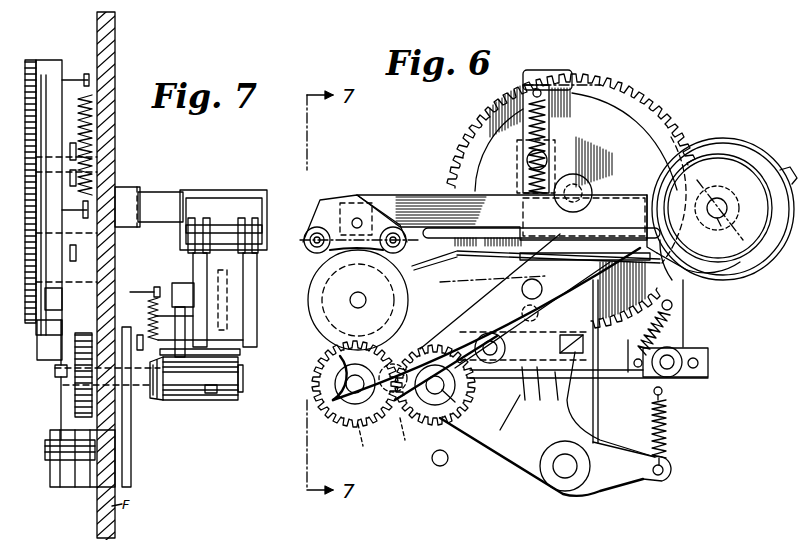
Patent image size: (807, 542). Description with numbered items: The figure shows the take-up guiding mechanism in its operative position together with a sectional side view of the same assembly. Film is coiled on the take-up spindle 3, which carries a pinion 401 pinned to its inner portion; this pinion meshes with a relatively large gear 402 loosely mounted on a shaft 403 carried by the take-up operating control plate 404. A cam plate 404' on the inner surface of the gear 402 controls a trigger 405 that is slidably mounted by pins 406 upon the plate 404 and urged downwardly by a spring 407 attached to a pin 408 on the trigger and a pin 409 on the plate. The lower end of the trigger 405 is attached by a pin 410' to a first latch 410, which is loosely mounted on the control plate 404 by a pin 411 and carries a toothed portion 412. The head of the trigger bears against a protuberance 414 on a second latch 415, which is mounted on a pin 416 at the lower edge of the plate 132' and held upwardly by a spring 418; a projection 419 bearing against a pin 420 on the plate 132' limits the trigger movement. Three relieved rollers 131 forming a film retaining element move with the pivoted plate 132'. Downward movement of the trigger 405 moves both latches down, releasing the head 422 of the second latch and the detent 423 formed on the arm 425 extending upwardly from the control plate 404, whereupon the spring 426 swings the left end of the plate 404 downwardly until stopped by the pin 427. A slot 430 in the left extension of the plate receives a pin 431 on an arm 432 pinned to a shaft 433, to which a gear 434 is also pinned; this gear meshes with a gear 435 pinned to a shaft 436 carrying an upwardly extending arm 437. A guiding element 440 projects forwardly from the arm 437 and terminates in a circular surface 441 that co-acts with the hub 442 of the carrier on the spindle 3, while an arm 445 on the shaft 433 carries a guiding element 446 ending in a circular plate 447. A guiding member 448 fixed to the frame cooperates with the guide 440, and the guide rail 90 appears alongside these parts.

In FIG. 6, the take-up spindle 3 is at (721, 226).
In FIG. 7, the guide rail / roller 90 is at (257, 347).
In FIG. 6, the guide rail / roller 90 is at (308, 255).
In FIG. 7, the rollers 131 is at (206, 222).
In FIG. 6, the rollers 131 is at (305, 230).
In FIG. 7, the plate 132' is at (163, 186).
In FIG. 6, the plate 132' is at (556, 255).
In FIG. 6, the pinion 401 is at (735, 195).
In FIG. 7, the gear 402 is at (30, 60).
In FIG. 6, the gear 402 is at (625, 96).
In FIG. 7, the shaft 403 is at (100, 234).
In FIG. 6, the shaft 403 is at (577, 187).
In FIG. 6, the take-up operating control plate 404 is at (555, 461).
In FIG. 7, the cam plate 404' is at (65, 187).
In FIG. 6, the cam plate 404' is at (548, 142).
In FIG. 7, the trigger 405 is at (48, 60).
In FIG. 6, the trigger 405 is at (560, 72).
In FIG. 7, the pins 406 is at (77, 152).
In FIG. 6, the pins 406 is at (541, 160).
In FIG. 7, the spring 407 is at (92, 125).
In FIG. 6, the spring 407 is at (546, 128).
In FIG. 7, the pin 408 is at (89, 80).
In FIG. 6, the pin 408 is at (533, 93).
In FIG. 7, the pin 409 is at (90, 210).
In FIG. 6, the pin 409 is at (584, 205).
In FIG. 7, the first latch 410 is at (66, 334).
In FIG. 6, the first latch 410 is at (559, 419).
In FIG. 7, the pin 410' is at (70, 292).
In FIG. 6, the pin 410' is at (525, 346).
In FIG. 6, the pin 411 is at (445, 333).
In FIG. 6, the toothed portion 412 is at (637, 359).
In FIG. 6, the protuberance 414 is at (628, 378).
In FIG. 6, the second latch 415 is at (682, 383).
In FIG. 6, the pin 416 is at (709, 378).
In FIG. 7, the spring 418 is at (159, 292).
In FIG. 6, the spring 418 is at (675, 313).
In FIG. 6, the projection 419 is at (709, 352).
In FIG. 6, the pin 420 is at (699, 363).
In FIG. 7, the head 422 is at (160, 342).
In FIG. 6, the head 422 is at (525, 400).
In FIG. 7, the detent 423 is at (157, 315).
In FIG. 6, the detent 423 is at (594, 433).
In FIG. 7, the arm 425 is at (128, 425).
In FIG. 6, the arm 425 is at (589, 406).
In FIG. 6, the spring 426 is at (668, 436).
In FIG. 7, the pin 427 is at (48, 462).
In FIG. 6, the pin 427 is at (449, 458).
In FIG. 6, the slot 430 is at (405, 418).
In FIG. 7, the pin 431 is at (56, 372).
In FIG. 6, the pin 431 is at (400, 412).
In FIG. 6, the arm 432 is at (375, 441).
In FIG. 7, the shaft 433 is at (243, 390).
In FIG. 7, the gear 434 is at (75, 412).
In FIG. 6, the gear 434 is at (352, 418).
In FIG. 6, the gear 435 is at (472, 364).
In FIG. 7, the shaft 436 is at (215, 395).
In FIG. 6, the shaft 436 is at (455, 402).
In FIG. 7, the arm 437 is at (195, 352).
In FIG. 6, the arm 437 is at (478, 262).
In FIG. 6, the guiding element 440 is at (643, 202).
In FIG. 6, the circular surface 441 is at (740, 142).
In FIG. 6, the hub 442 is at (737, 282).
In FIG. 7, the arm 445 is at (190, 358).
In FIG. 6, the arm 445 is at (470, 320).
In FIG. 6, the guiding element 446 is at (670, 282).
In FIG. 6, the circular plate 447 is at (742, 275).
In FIG. 6, the guiding member 448 is at (498, 235).